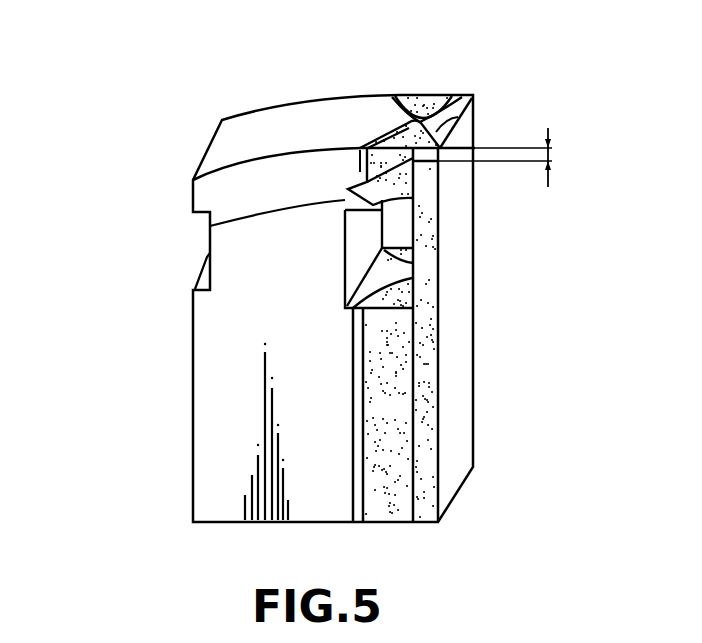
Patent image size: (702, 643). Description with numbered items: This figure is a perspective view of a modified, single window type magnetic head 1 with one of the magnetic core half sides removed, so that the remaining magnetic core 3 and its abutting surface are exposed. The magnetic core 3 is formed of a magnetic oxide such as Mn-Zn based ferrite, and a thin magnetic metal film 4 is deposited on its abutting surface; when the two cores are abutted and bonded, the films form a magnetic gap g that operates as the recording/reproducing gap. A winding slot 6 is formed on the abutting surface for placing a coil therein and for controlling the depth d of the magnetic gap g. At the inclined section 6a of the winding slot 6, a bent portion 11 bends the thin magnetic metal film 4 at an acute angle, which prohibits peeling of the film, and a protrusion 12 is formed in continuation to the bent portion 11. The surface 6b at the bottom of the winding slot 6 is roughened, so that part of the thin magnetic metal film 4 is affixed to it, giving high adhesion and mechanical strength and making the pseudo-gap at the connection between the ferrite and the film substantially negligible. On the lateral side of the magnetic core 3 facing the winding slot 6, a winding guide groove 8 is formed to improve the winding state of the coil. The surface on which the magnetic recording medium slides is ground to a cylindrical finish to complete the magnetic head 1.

The magnetic head 1 is at (143, 190).
The magnetic core 3 is at (430, 103).
The thin magnetic metal film 4 is at (457, 128).
The winding slot 6 is at (345, 298).
The inclined section of the winding slot 6a is at (361, 172).
The bottom surface of the winding slot 6b is at (420, 296).
The winding guide groove 8 is at (207, 257).
The bent portion 11 is at (348, 188).
The protrusion 12 is at (210, 226).
The magnetic gap g is at (460, 98).
The depth of the magnetic gap d is at (510, 157).